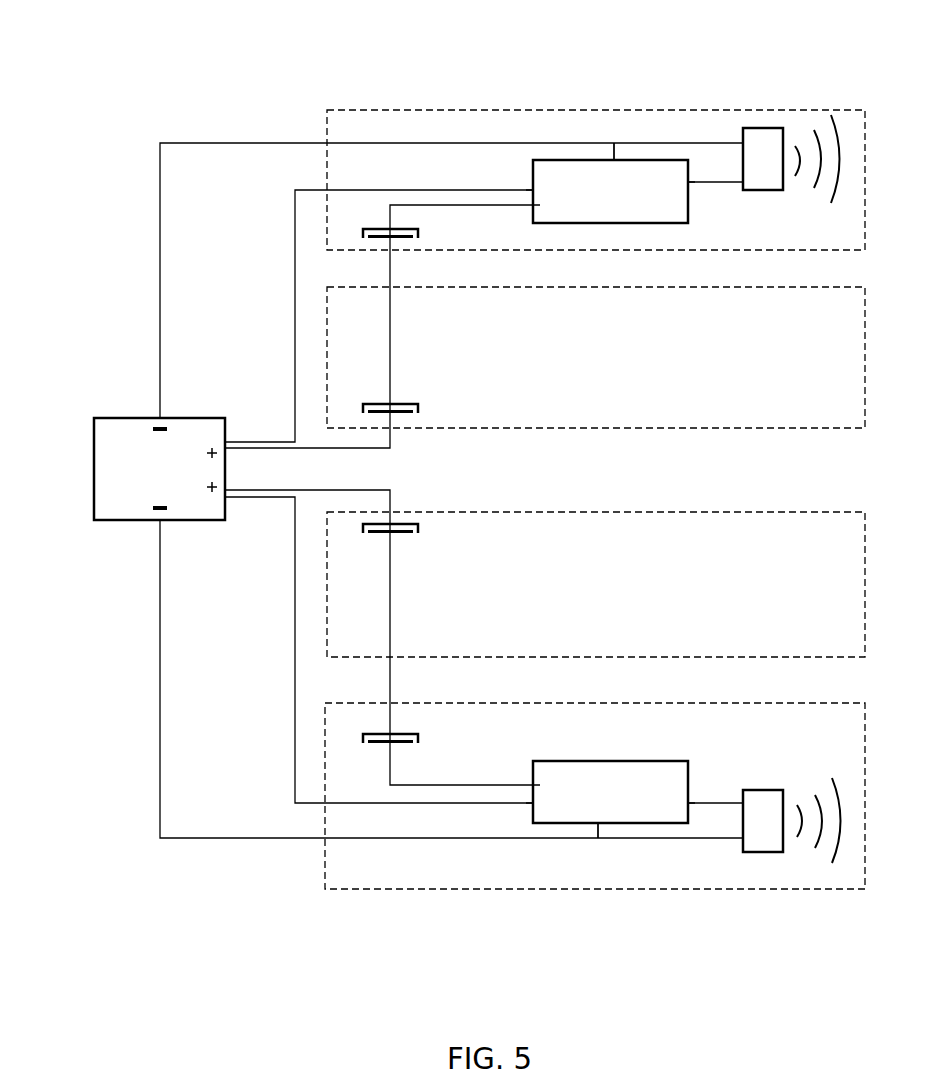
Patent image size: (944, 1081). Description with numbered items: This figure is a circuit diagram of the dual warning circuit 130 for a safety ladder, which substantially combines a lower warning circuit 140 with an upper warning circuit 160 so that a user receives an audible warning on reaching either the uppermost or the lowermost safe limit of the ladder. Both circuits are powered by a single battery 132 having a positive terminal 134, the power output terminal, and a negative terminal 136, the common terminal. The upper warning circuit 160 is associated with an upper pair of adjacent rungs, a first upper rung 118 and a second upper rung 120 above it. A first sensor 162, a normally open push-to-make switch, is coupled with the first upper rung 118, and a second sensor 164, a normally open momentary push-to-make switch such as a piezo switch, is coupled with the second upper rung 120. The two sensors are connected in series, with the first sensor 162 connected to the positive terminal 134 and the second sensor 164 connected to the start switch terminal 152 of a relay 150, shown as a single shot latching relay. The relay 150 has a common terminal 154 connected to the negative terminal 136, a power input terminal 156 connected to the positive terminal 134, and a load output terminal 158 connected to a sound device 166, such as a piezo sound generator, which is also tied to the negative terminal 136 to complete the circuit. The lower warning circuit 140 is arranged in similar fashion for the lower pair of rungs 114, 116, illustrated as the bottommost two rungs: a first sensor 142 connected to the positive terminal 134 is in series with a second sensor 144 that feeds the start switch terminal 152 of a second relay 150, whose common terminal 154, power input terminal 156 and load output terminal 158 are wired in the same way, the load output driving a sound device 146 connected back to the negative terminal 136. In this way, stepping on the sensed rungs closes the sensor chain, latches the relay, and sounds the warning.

The dual warning circuit 130 is at (117, 80).
The upper warning circuit 160 is at (302, 90).
The lower warning circuit 140 is at (286, 878).
The second upper rung 120 is at (493, 108).
The first upper rung 118 is at (455, 430).
The lower rung 114 is at (557, 508).
The lower rung 116 is at (483, 892).
The battery 132 is at (93, 452).
The positive terminal 134 is at (225, 436).
The negative terminal 136 is at (160, 413).
The second sensor 164 is at (372, 230).
The first sensor 162 is at (398, 405).
The first sensor 142 is at (398, 533).
The second sensor 144 is at (398, 735).
The relay 150 is at (603, 223).
The start switch terminal 152 is at (533, 205).
The common terminal 154 is at (615, 158).
The power input terminal 156 is at (533, 190).
The load output terminal 158 is at (688, 185).
The sound device 166 is at (765, 128).
The sound device 146 is at (763, 790).